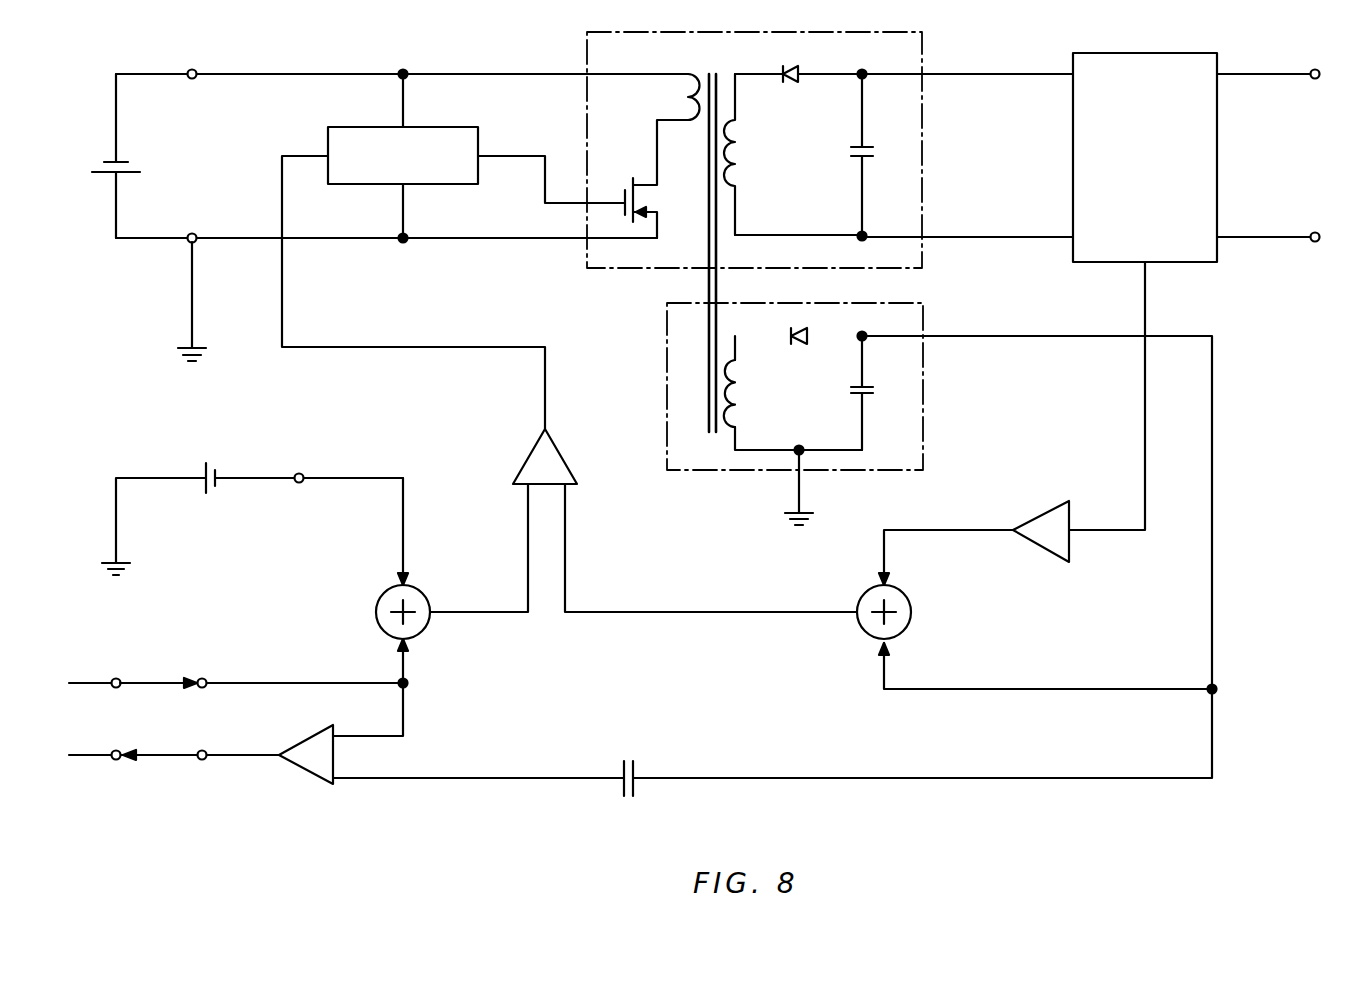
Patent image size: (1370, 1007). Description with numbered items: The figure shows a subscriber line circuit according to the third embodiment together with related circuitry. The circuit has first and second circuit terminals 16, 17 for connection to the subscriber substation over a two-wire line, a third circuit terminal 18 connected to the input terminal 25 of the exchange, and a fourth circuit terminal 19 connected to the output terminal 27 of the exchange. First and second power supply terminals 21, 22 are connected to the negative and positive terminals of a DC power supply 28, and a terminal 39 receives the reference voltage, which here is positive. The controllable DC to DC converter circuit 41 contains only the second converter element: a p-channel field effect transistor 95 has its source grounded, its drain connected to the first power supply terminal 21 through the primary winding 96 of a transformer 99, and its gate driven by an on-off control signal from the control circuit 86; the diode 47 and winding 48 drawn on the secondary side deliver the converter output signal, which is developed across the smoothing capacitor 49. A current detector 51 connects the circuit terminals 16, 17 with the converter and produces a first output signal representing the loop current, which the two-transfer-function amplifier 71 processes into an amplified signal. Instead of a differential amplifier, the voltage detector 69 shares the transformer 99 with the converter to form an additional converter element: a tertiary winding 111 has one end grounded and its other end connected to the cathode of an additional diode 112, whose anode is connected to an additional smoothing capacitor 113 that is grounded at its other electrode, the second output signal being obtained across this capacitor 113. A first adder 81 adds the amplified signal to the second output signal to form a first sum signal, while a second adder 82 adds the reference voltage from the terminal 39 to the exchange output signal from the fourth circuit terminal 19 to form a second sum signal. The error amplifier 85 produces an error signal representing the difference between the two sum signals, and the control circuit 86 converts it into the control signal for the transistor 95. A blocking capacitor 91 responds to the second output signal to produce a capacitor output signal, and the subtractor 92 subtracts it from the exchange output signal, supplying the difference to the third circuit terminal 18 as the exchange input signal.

The first circuit terminal 16 is at (1319, 70).
The second circuit terminal 17 is at (1319, 233).
The third circuit terminal 18 is at (204, 760).
The fourth circuit terminal 19 is at (205, 679).
The first power supply terminal 21 is at (197, 70).
The second power supply terminal 22 is at (196, 234).
The input terminal 25 is at (113, 760).
The output terminal 27 is at (114, 679).
The DC power supply 28 is at (100, 167).
The terminal 39 is at (302, 472).
The controllable DC to DC converter circuit 41 is at (972, 284).
The rectifier diode 47 is at (790, 83).
The secondary winding 48 is at (741, 168).
The smoothing capacitor 49 is at (873, 151).
The current detector 51 is at (1218, 173).
The voltage detector 69 is at (924, 376).
The two-transfer-function amplifier 71 is at (1069, 556).
The first adder 81 is at (912, 612).
The second adder 82 is at (417, 599).
The error amplifier 85 is at (522, 449).
The control circuit 86 is at (452, 126).
The blocking capacitor 91 is at (636, 768).
The subtractor 92 is at (318, 787).
The p-channel field effect transistor 95 is at (643, 186).
The primary winding 96 is at (688, 97).
The transformer 99 is at (698, 287).
The tertiary winding 111 is at (738, 404).
The additional diode 112 is at (806, 344).
The additional smoothing capacitor 113 is at (869, 394).